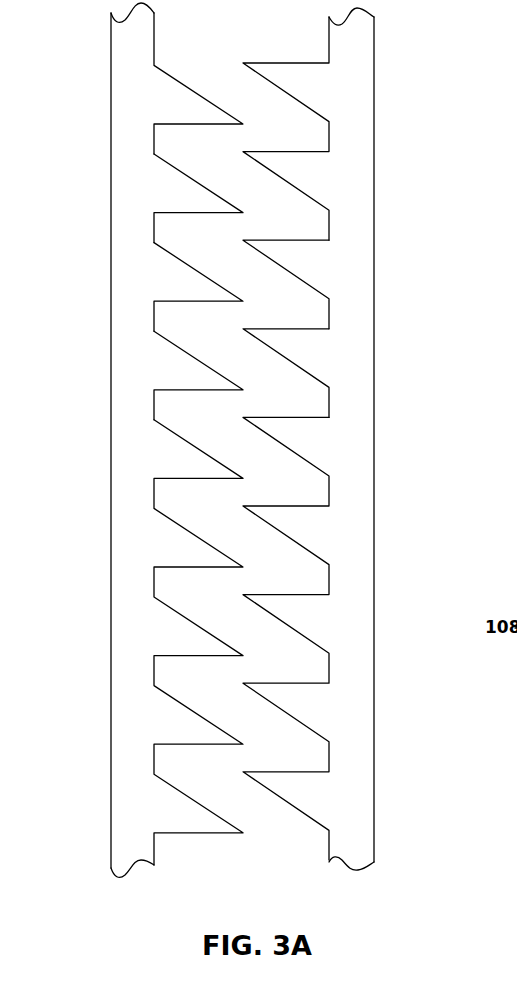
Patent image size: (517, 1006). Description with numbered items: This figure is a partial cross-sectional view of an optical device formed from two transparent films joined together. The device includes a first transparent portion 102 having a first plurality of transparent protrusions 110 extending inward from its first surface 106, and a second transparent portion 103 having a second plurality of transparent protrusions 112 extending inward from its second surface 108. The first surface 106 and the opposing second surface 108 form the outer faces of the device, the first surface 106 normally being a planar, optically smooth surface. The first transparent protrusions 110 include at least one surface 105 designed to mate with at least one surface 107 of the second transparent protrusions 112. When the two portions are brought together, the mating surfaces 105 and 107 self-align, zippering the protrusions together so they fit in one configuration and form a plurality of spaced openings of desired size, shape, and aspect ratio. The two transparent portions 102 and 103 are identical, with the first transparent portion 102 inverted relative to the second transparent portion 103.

The first transparent portion 102 is at (360, 213).
The second transparent portion 103 is at (125, 96).
The mating surface of first protrusions 105 is at (323, 289).
The first surface 106 is at (385, 710).
The mating surface of second protrusions 107 is at (178, 360).
The second surface 108 is at (102, 492).
The first plurality of transparent protrusions 110 is at (320, 357).
The second plurality of transparent protrusions 112 is at (157, 272).